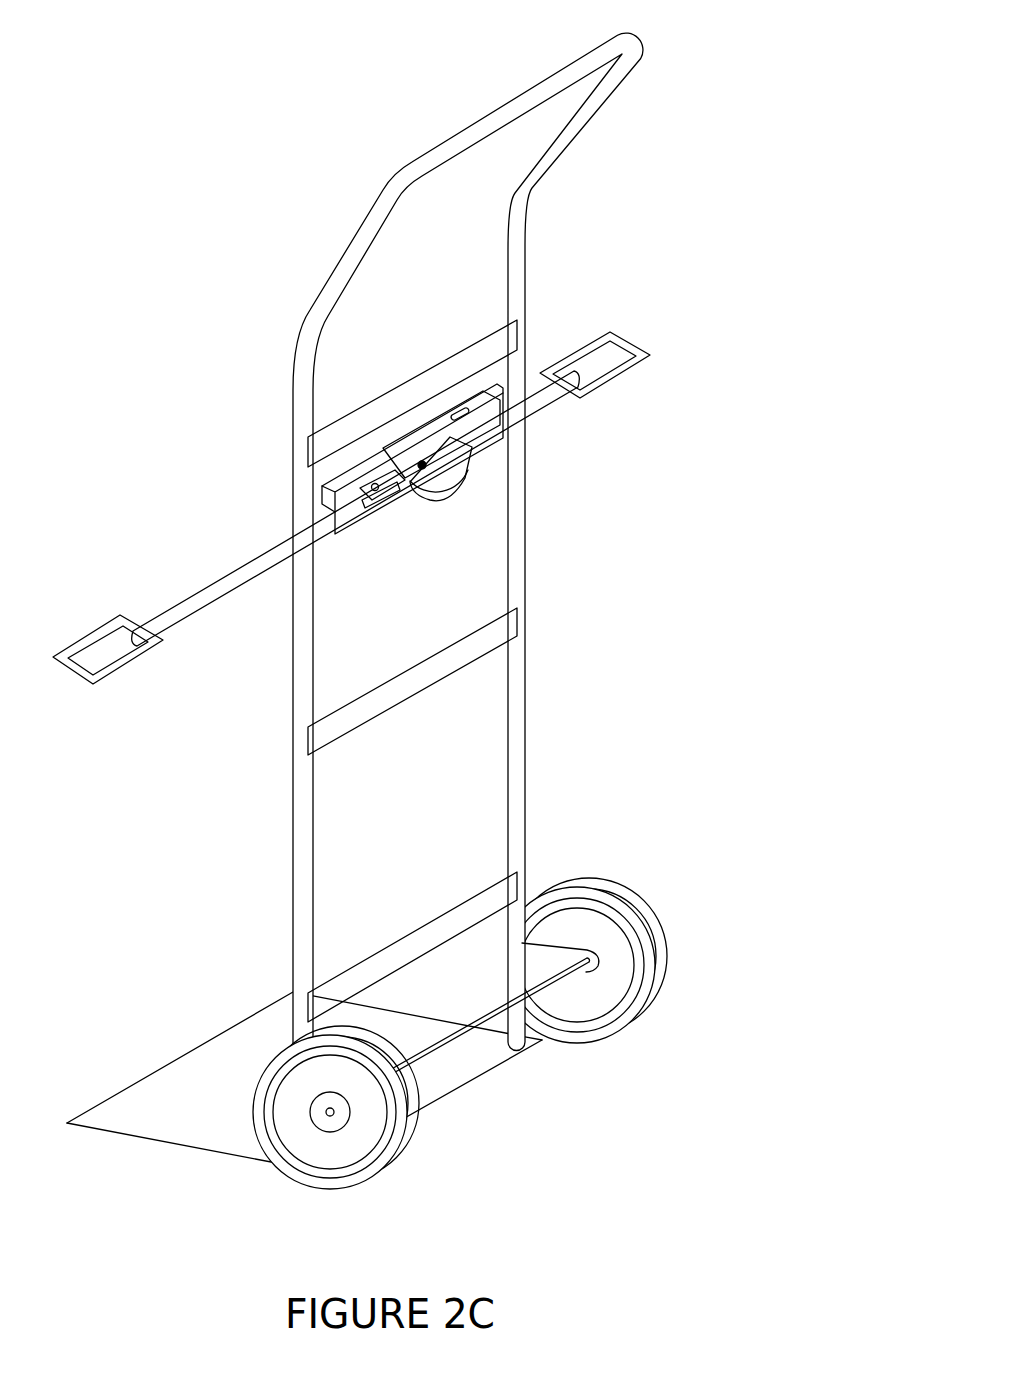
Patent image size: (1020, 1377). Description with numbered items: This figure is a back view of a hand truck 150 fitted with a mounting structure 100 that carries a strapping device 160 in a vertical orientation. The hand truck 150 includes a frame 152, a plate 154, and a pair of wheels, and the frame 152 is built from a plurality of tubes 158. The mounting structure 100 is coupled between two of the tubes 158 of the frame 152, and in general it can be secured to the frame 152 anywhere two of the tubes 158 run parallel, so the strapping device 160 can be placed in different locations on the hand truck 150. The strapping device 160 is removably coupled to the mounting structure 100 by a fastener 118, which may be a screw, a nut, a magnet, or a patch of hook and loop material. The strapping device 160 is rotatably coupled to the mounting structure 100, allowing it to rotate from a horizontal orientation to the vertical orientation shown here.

The mounting structure 100 is at (355, 532).
The fastener 118 is at (385, 474).
The hand truck 150 is at (220, 503).
The frame 152 is at (628, 32).
The plate 154 is at (177, 1057).
The tubes 158 is at (526, 557).
The strapping device 160 is at (470, 488).